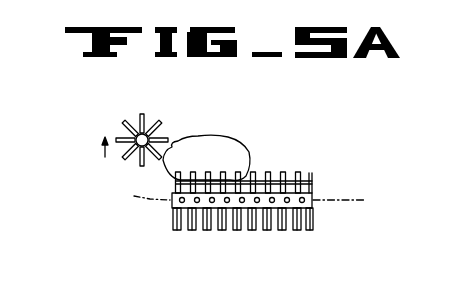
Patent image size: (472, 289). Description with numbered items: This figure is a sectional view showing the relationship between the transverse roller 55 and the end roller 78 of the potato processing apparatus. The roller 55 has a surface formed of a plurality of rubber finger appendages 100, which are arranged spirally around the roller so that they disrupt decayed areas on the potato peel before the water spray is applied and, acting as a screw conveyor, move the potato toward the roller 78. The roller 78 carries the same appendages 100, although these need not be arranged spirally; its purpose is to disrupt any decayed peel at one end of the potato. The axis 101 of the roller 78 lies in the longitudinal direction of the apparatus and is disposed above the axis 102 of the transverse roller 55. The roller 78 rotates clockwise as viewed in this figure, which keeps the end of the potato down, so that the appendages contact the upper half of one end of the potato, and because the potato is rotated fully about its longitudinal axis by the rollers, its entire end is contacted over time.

The roller 55 is at (313, 205).
The roller 78 is at (122, 124).
The rubber finger appendages 100 is at (150, 122).
The axis of roller 78 101 is at (104, 161).
The axis of the transverse roller 55 102 is at (81, 186).
The potato P is at (218, 137).